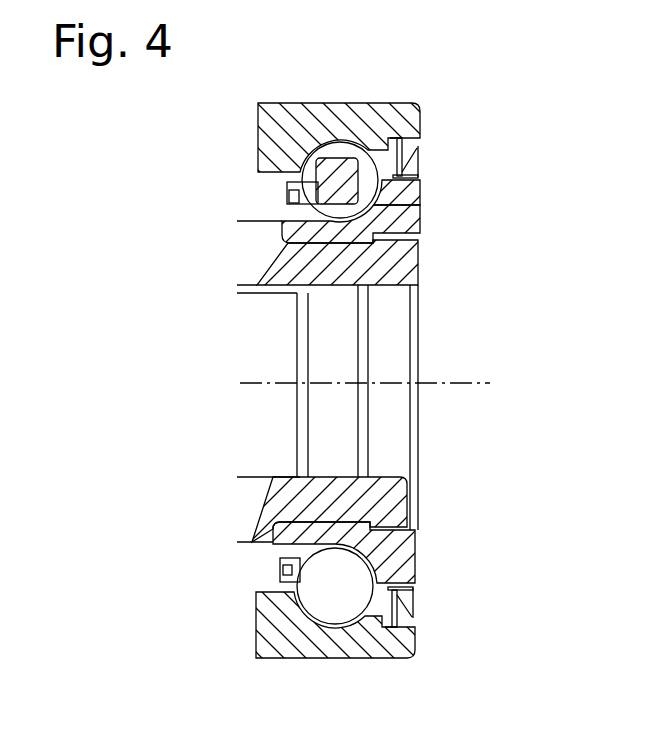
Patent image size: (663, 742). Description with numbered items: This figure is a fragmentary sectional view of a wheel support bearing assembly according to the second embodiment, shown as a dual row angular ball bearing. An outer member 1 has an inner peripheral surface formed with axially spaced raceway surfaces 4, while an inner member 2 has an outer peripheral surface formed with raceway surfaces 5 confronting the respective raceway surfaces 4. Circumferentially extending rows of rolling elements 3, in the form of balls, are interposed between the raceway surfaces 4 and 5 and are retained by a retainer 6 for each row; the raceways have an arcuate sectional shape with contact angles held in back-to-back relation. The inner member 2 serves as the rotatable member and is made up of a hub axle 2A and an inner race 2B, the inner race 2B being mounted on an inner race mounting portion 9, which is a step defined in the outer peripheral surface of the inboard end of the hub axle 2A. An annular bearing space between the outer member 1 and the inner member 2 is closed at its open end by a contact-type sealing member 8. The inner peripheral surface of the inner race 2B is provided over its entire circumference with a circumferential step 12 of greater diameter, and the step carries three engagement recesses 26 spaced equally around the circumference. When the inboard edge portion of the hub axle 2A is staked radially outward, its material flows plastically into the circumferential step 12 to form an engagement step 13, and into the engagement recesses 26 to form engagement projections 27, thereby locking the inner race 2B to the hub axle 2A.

The outer member 1 is at (327, 103).
The inner member 2 is at (118, 252).
The hub axle 2A is at (268, 250).
The inner race 2B is at (252, 296).
The rolling elements 3 is at (363, 157).
The raceway surfaces 4 is at (341, 156).
The raceway surfaces 5 is at (423, 204).
The retainer 6 is at (286, 196).
The sealing member 8 is at (426, 152).
The inner race mounting portion 9 is at (284, 288).
The circumferential step 12 is at (413, 517).
The engagement step 13 is at (402, 505).
The engagement recesses 26 is at (417, 275).
The engagement projections 27 is at (381, 240).